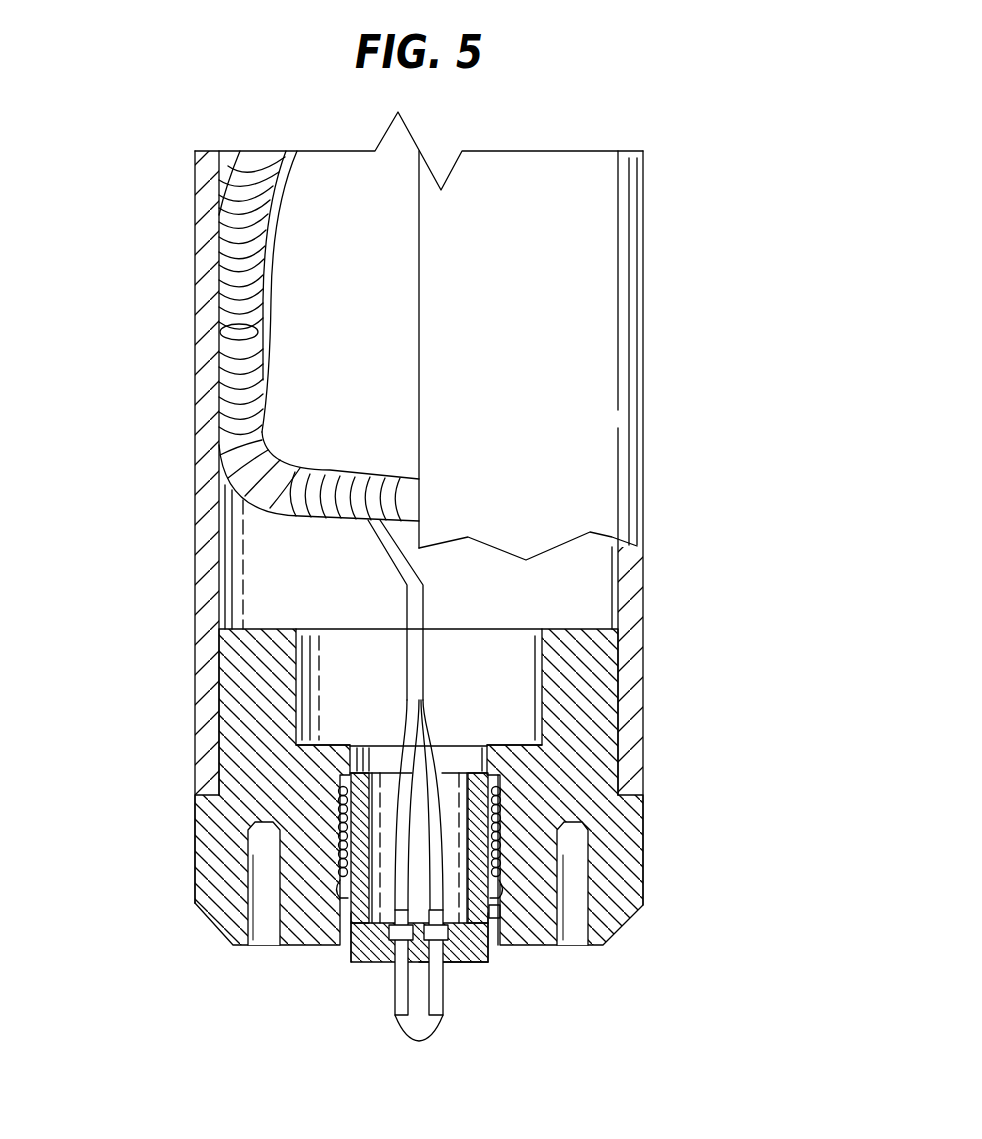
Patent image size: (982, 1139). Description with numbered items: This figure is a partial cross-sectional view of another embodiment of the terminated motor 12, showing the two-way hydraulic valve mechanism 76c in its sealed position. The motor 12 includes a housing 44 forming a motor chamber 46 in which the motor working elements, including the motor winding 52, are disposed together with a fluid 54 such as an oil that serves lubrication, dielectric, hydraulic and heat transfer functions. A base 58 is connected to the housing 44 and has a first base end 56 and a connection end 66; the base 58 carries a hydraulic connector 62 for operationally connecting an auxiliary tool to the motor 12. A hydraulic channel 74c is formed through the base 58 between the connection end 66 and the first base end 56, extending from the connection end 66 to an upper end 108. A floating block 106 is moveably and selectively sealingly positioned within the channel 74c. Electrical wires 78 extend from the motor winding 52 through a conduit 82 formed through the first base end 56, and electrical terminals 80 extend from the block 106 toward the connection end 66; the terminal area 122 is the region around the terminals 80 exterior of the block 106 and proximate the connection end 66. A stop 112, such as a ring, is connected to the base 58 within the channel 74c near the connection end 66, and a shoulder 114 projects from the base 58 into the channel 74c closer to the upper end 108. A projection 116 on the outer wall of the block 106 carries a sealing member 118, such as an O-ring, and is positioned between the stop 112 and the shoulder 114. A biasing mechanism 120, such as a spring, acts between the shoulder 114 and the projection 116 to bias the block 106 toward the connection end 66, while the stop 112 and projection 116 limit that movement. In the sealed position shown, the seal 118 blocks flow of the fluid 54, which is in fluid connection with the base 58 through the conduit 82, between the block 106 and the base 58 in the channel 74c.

The terminated motor 12 is at (676, 231).
The housing 44 is at (643, 330).
The motor chamber 46 is at (480, 355).
The motor winding 52 is at (242, 380).
The fluid 54 is at (335, 308).
The first base end 56 is at (598, 623).
The base 58 is at (195, 831).
The hydraulic connector 62 is at (297, 966).
The connection end 66 is at (549, 950).
The hydraulic channel 74c is at (340, 935).
The two-way hydraulic valve mechanism 76c is at (484, 979).
The electrical wires 78 is at (383, 548).
The electrical terminals 80 is at (420, 1048).
The conduit 82 is at (474, 627).
The floating block 106 is at (340, 797).
The upper end 108 is at (472, 741).
The stop 112 is at (492, 921).
The shoulder 114 is at (497, 788).
The projection 116 is at (500, 905).
The sealing member 118 is at (500, 895).
The biasing mechanism 120 is at (500, 815).
The terminal area 122 is at (364, 978).